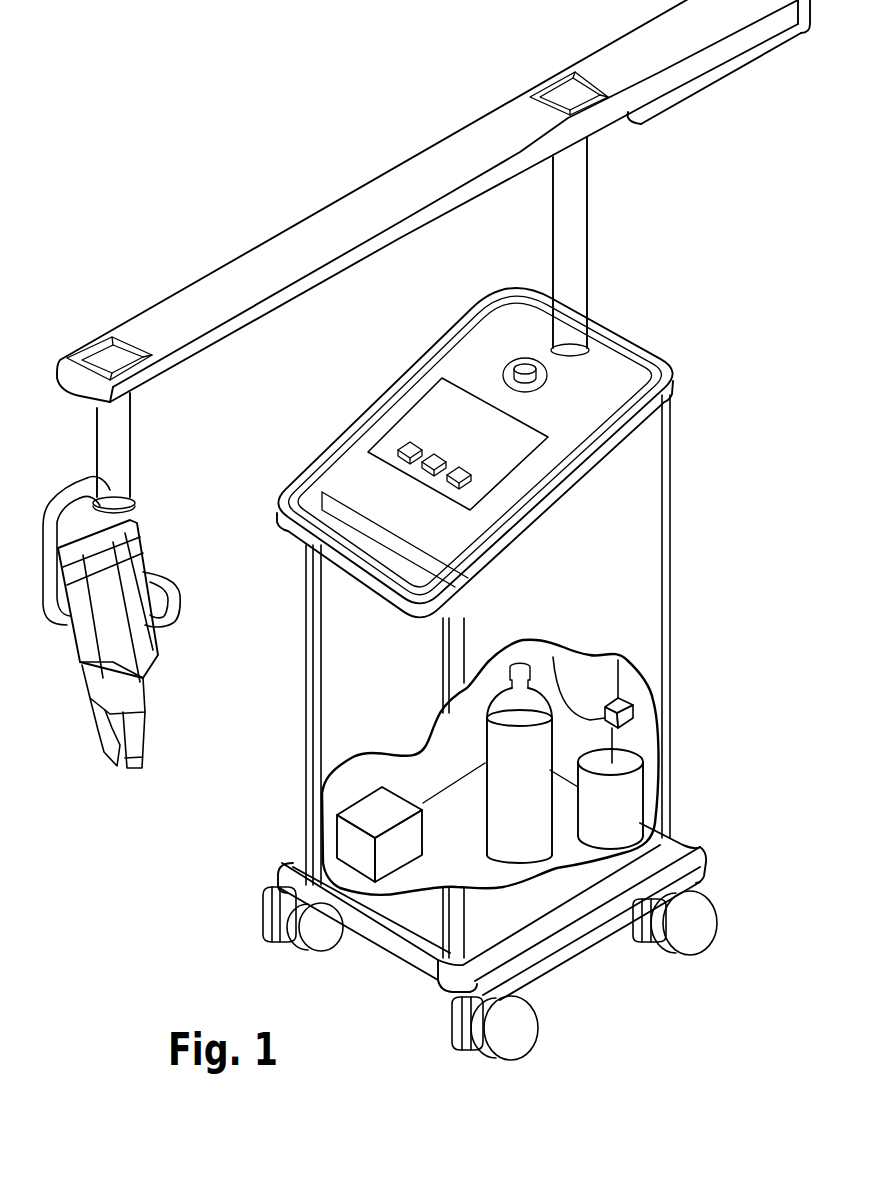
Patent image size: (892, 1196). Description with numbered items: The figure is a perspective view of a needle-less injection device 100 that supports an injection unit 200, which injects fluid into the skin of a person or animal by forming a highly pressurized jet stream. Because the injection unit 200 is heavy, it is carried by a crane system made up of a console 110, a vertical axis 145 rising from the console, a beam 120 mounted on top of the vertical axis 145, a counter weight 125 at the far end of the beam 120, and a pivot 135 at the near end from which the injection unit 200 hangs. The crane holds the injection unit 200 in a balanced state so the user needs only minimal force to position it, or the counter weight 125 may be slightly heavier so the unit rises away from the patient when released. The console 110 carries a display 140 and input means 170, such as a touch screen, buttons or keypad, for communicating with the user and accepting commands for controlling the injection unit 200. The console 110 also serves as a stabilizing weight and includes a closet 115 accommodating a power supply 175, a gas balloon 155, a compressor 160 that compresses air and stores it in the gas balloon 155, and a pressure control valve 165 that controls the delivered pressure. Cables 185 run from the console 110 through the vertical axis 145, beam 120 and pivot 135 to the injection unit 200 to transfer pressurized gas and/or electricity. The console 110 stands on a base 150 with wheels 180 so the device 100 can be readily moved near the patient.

The needle-less injection device 100 is at (250, 84).
The console 110 is at (666, 362).
The closet 115 is at (612, 566).
The beam 120 is at (330, 228).
The counter weight 125 is at (710, 86).
The pivot 135 is at (131, 427).
The display 140 is at (435, 427).
The vertical axis 145 is at (545, 188).
The base 150 is at (573, 955).
The gas balloon 155 is at (528, 698).
The compressor 160 is at (635, 792).
The pressure control valve 165 is at (632, 724).
The input means 170 is at (402, 443).
The power supply 175 is at (347, 837).
The wheels 180 is at (263, 910).
The cables 185 is at (620, 682).
The injection unit 200 is at (145, 657).